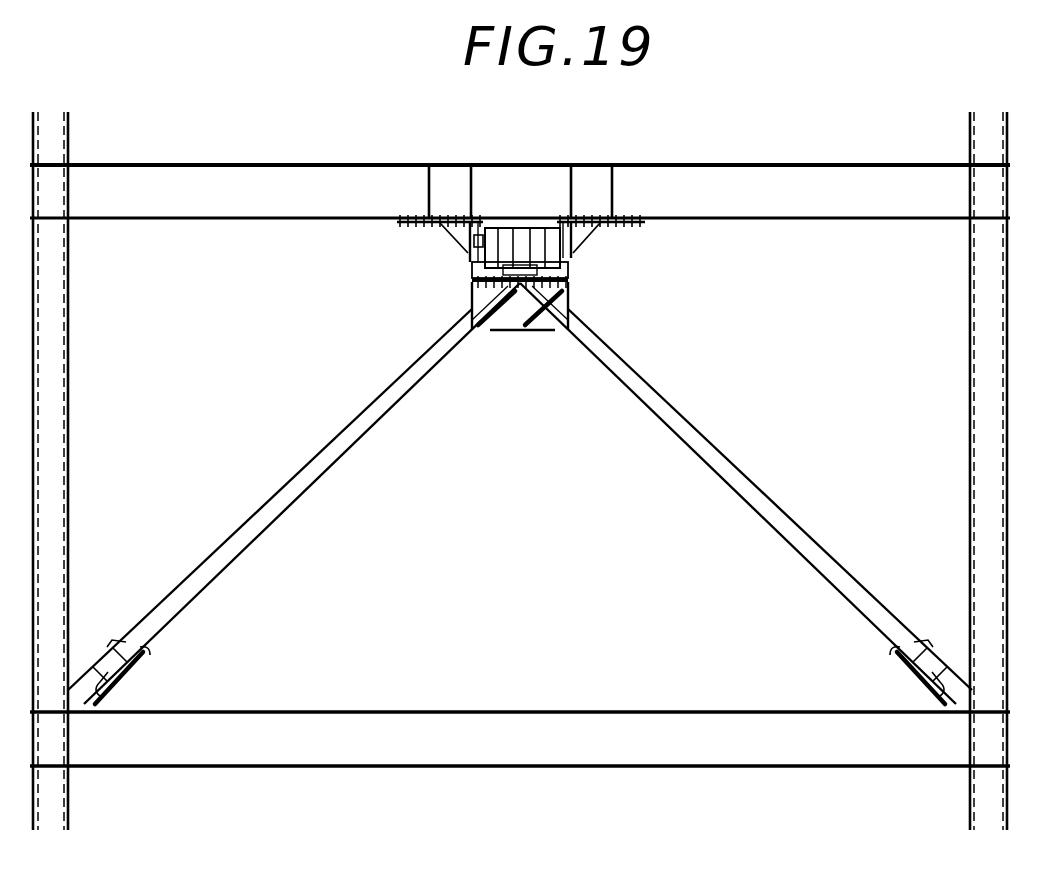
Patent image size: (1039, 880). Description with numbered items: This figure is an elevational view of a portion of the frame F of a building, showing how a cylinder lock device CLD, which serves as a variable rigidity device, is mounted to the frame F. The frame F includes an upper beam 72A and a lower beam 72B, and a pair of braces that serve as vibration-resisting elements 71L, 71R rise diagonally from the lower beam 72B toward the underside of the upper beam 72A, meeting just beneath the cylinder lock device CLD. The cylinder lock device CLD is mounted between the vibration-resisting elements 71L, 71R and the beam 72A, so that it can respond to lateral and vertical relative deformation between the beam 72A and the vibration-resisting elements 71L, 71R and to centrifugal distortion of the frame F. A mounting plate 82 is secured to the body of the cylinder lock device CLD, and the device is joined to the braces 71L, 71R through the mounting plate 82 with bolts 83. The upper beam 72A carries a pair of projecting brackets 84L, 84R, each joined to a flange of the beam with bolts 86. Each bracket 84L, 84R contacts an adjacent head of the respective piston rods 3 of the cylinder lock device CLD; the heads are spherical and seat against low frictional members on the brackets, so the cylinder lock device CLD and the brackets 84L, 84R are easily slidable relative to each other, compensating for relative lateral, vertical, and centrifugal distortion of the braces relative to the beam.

The frame F is at (762, 142).
The beam 72A is at (226, 175).
The beam 72B is at (483, 728).
The vibration-resisting element 71L is at (323, 468).
The vibration-resisting element 71R is at (658, 393).
The mounting plate 82 is at (572, 282).
The bolts 83 is at (467, 301).
The projecting bracket 84L is at (455, 228).
The projecting bracket 84R is at (590, 232).
The bolts 86 is at (625, 220).
The cylinder lock device CLD is at (523, 236).
The piston rods 3 is at (470, 254).